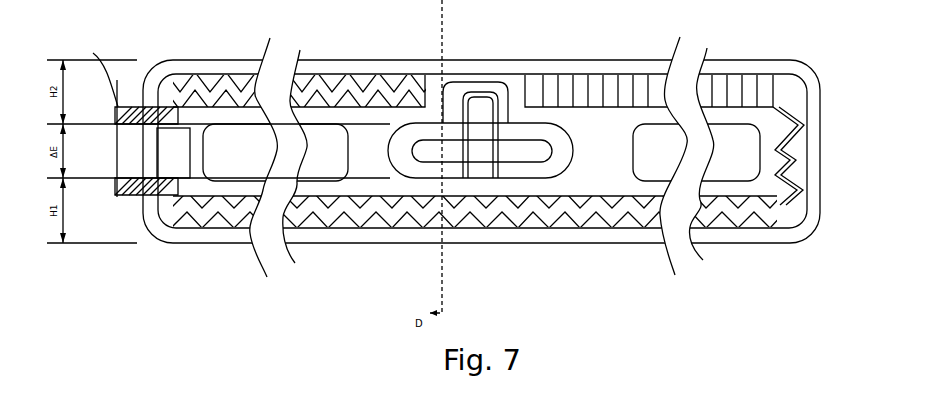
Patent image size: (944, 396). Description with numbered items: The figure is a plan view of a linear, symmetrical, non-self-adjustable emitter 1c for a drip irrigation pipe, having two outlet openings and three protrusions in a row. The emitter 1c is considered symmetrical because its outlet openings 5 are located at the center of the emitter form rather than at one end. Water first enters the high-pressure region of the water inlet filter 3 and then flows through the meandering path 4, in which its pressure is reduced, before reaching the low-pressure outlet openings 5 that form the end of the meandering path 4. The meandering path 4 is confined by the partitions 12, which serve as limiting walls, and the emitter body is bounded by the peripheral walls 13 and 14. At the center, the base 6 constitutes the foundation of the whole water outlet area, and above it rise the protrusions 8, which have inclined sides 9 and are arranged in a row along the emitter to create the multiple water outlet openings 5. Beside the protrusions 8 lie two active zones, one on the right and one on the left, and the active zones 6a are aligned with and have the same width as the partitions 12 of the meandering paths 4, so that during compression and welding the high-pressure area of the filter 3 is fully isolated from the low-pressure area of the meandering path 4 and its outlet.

The emitter 1c is at (727, 60).
The water inlet filter 3 is at (602, 93).
The meandering path 4 is at (353, 213).
The water outlet opening 5 is at (482, 155).
The base 6 is at (360, 155).
The active zones 6a is at (93, 53).
The protrusions 8 is at (437, 150).
The inclined sides 9 is at (413, 137).
The partitions 12 is at (208, 115).
The peripheral wall 13 is at (510, 70).
The peripheral wall 14 is at (812, 147).